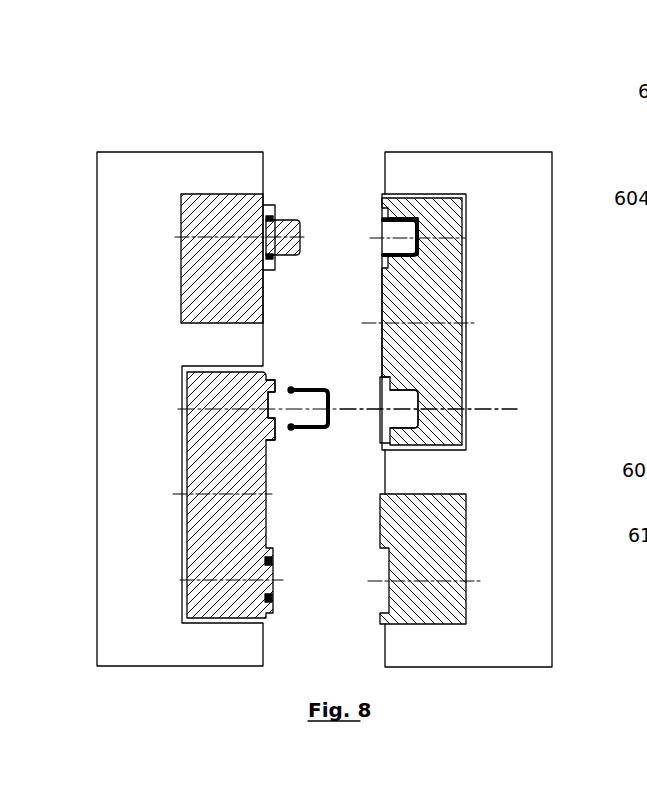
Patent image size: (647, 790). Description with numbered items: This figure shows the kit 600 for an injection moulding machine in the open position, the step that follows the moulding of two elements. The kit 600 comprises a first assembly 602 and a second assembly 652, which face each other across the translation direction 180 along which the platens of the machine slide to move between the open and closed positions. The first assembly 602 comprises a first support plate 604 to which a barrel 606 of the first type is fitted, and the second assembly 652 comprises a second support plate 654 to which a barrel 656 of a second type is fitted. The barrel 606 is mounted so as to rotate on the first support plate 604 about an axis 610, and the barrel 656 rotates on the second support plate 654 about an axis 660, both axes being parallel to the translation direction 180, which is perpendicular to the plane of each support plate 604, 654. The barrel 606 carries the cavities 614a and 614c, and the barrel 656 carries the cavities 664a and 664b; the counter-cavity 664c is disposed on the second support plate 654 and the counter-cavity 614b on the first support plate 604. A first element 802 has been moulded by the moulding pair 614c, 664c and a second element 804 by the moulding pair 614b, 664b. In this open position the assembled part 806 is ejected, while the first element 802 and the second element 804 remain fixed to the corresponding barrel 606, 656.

The kit 600 is at (353, 120).
The first assembly 602 is at (142, 132).
The first support plate 604 is at (108, 178).
The barrel of the first type 606 is at (190, 420).
The axis 610 is at (200, 500).
The cavity 614a is at (275, 391).
The counter-cavity 614b is at (280, 235).
The cavity 614c is at (273, 561).
The second assembly 652 is at (473, 123).
The second support plate 654 is at (526, 175).
The barrel of the second type 656 is at (452, 259).
The axis 660 is at (455, 342).
The cavity 664a is at (392, 420).
The cavity 664b is at (397, 241).
The counter-cavity 664c is at (389, 590).
The first element 802 is at (272, 598).
The second element 804 is at (380, 231).
The assembled part 806 is at (329, 403).
The translation direction 180 is at (517, 408).